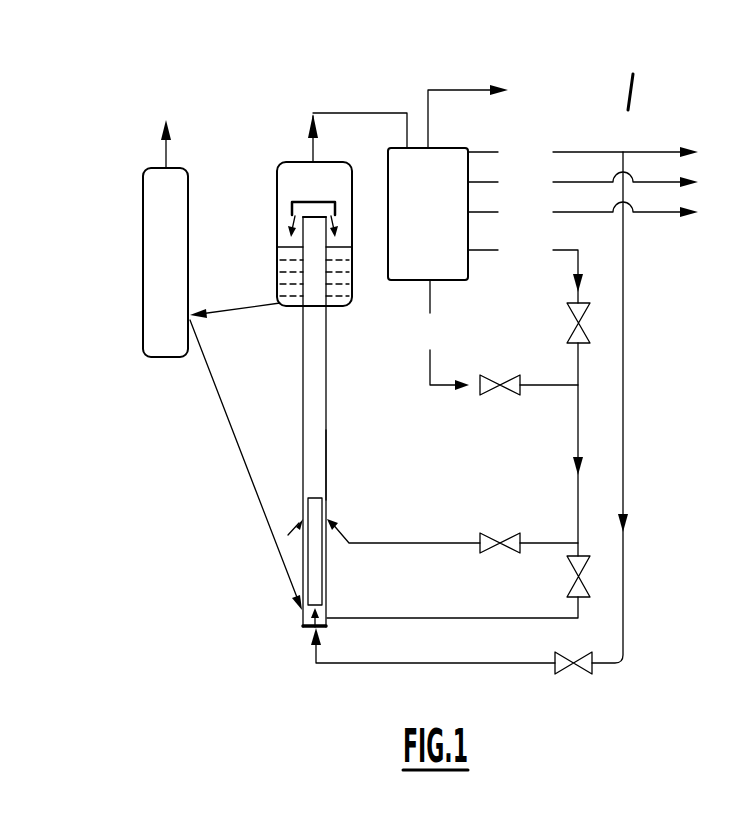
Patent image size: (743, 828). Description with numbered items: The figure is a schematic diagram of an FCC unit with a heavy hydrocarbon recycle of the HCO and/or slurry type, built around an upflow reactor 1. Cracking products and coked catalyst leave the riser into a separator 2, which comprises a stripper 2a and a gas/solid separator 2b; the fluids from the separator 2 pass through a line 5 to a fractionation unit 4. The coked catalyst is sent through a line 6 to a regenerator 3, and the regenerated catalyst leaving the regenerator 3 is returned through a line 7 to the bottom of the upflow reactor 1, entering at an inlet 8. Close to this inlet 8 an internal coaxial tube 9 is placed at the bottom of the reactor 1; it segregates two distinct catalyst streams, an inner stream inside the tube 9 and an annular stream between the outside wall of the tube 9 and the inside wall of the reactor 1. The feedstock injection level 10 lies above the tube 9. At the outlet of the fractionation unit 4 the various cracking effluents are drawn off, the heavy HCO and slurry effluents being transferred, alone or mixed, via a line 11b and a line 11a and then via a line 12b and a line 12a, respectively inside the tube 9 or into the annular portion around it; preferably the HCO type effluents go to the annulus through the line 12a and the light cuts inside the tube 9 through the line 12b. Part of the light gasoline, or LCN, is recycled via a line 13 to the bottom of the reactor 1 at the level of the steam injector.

The upflow reactor 1 is at (333, 396).
The separator 2 is at (277, 175).
The stripper 2a is at (346, 304).
The gas/solid separator 2b is at (322, 204).
The regenerator 3 is at (143, 253).
The fractionation unit 4 is at (445, 148).
The line 5 is at (372, 82).
The line 6 is at (257, 306).
The line 7 is at (231, 425).
The inlet 8 is at (300, 618).
The coaxial tube 9 is at (320, 575).
The feedstock injection level 10 is at (317, 474).
The line 11a is at (443, 390).
The line 11b is at (580, 277).
The line 12a is at (398, 512).
The line 12b is at (400, 590).
The line 13 is at (623, 428).